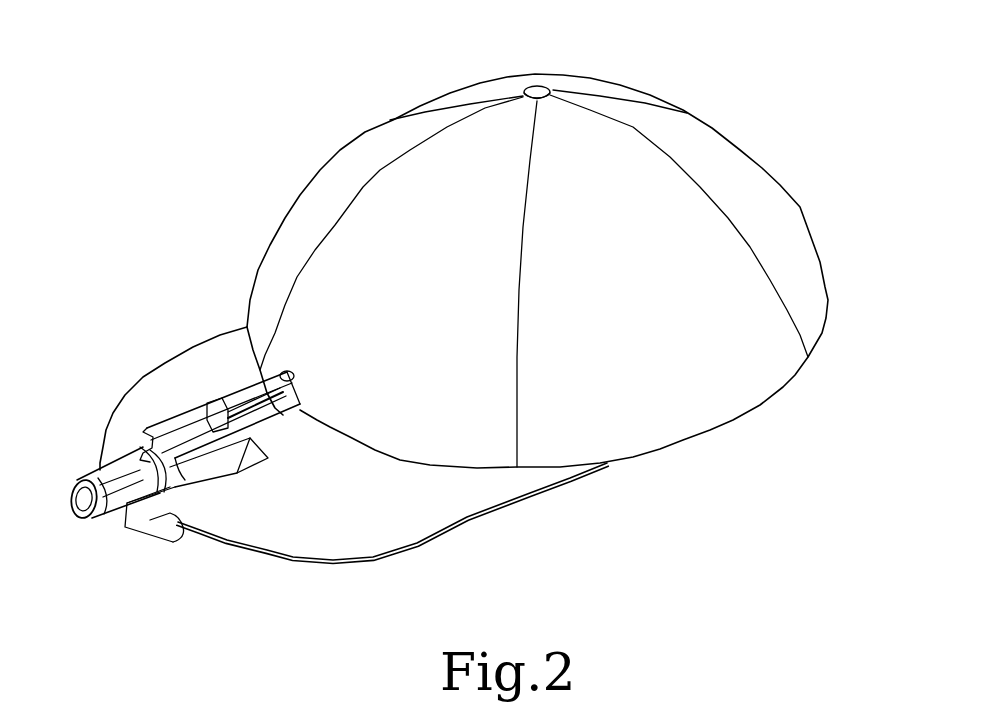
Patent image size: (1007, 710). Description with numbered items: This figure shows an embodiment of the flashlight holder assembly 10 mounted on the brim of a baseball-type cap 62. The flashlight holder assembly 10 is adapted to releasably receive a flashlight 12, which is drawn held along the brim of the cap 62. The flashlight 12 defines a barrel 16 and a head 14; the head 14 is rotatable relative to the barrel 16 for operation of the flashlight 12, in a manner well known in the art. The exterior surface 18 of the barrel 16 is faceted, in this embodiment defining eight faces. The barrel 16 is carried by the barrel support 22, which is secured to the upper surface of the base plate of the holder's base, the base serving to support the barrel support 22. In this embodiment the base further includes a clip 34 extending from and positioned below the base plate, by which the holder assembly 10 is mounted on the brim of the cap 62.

The flashlight holder assembly 10 is at (204, 504).
The flashlight 12 is at (130, 462).
The head 14 is at (98, 505).
The barrel 16 is at (291, 408).
The exterior surface 18 is at (260, 415).
The barrel support 22 is at (218, 475).
The clip 34 is at (160, 516).
The baseball-type cap 62 is at (641, 275).